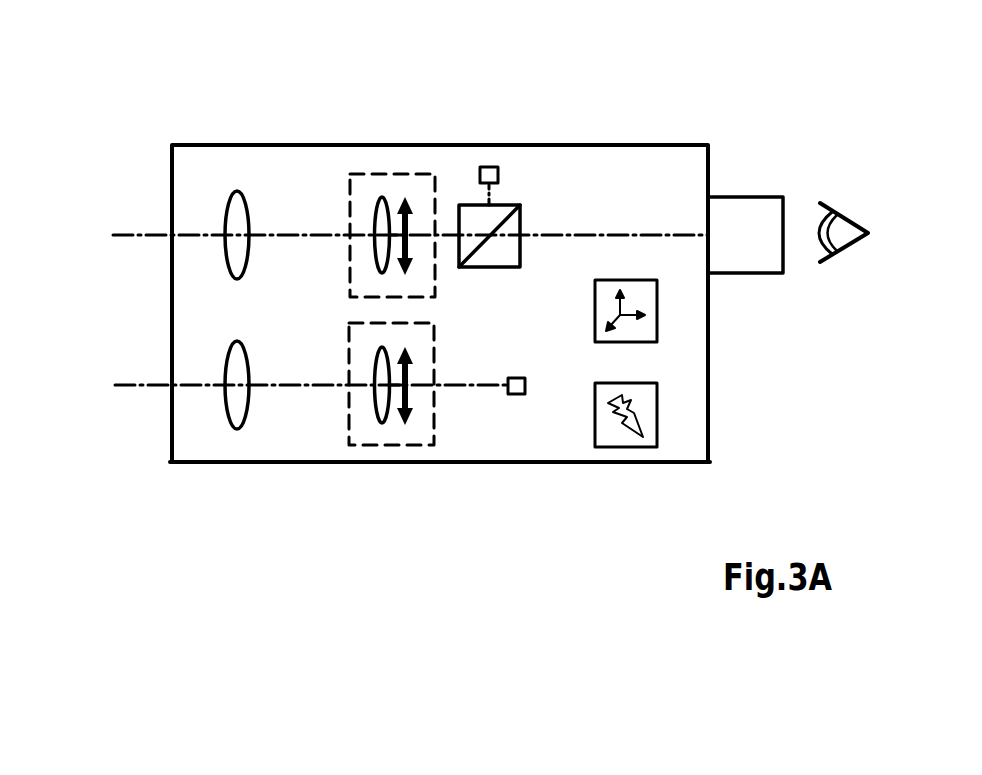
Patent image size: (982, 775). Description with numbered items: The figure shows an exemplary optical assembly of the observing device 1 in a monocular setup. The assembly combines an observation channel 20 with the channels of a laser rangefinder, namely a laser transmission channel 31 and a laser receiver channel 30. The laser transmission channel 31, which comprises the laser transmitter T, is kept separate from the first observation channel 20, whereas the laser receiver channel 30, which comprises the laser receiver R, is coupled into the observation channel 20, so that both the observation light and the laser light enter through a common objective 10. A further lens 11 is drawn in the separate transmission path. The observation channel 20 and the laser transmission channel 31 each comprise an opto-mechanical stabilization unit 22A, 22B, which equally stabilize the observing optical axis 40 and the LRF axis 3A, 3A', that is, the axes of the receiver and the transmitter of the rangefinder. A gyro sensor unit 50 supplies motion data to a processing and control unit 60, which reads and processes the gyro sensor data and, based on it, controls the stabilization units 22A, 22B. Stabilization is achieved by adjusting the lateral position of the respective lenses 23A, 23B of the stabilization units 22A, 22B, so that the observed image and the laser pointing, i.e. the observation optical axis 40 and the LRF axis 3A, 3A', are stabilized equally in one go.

The observing device 1 is at (186, 91).
The common objective 10 is at (237, 217).
The second lens 11 is at (235, 412).
The observation channel 20 is at (425, 274).
The laser receiver channel 30 is at (196, 163).
The laser transmission channel 31 is at (197, 447).
The observing optical axis 40 is at (381, 211).
The LRF axis 3A is at (381, 211).
The LRF axis 3A' is at (284, 413).
The opto-mechanical stabilization unit 22A is at (363, 192).
The lens 23A is at (383, 217).
The opto-mechanical stabilization unit 22B is at (363, 432).
The lens 23B is at (380, 407).
The gyro sensor unit 50 is at (640, 415).
The processing and control unit 60 is at (645, 303).